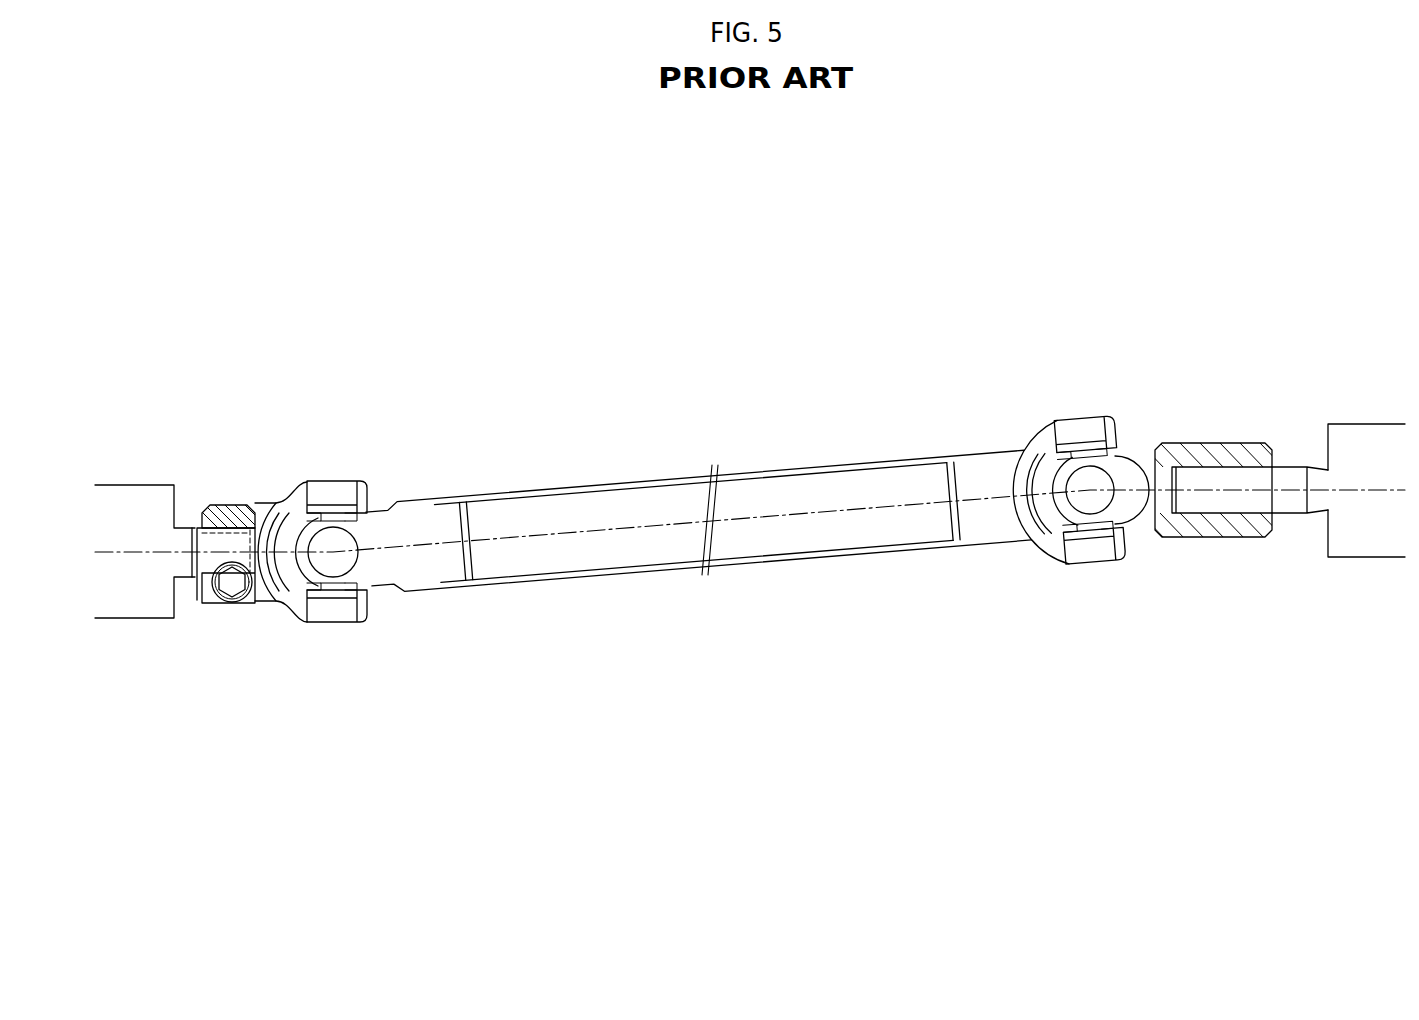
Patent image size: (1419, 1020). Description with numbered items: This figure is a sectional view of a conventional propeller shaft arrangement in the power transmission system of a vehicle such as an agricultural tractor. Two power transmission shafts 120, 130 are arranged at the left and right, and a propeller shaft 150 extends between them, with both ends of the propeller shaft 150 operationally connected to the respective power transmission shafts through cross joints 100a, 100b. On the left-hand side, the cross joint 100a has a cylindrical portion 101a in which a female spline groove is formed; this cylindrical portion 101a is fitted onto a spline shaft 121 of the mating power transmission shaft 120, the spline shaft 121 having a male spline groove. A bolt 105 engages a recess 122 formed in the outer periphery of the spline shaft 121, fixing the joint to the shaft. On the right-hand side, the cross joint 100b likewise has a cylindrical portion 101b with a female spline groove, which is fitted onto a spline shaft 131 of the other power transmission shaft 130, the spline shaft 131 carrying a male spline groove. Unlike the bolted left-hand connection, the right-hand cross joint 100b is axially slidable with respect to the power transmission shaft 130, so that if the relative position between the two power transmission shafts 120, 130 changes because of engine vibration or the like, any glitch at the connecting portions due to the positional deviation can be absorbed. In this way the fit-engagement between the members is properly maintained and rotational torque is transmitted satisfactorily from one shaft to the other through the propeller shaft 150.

The power transmission shaft 120 is at (144, 475).
The spline shaft 121 is at (207, 512).
The recess 122 is at (228, 545).
The bolt 105 is at (234, 590).
The cylindrical portion 101a is at (231, 515).
The cross joint 100a is at (310, 471).
The propeller shaft 150 is at (670, 468).
The cross joint 100b is at (1044, 408).
The cylindrical portion 101b is at (1198, 452).
The spline shaft 131 is at (1208, 520).
The power transmission shaft 130 is at (1367, 414).